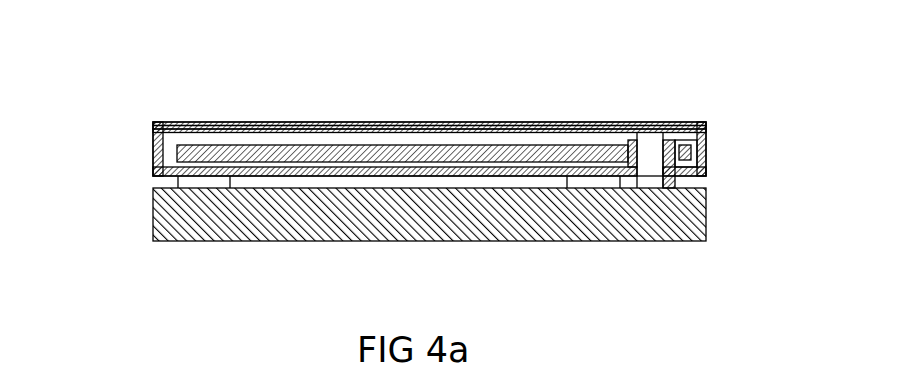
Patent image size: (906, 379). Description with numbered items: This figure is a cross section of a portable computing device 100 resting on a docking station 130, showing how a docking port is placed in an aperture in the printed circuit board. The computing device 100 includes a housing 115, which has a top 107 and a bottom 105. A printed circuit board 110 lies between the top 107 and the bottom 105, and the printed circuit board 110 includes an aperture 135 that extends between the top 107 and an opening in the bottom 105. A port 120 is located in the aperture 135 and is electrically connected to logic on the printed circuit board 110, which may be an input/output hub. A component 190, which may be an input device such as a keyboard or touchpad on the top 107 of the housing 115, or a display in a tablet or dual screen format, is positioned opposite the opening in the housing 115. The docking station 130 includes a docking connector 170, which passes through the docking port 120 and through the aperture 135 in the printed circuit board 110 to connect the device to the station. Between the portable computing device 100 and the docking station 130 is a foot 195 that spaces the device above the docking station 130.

The portable computing device 100 is at (243, 120).
The bottom 105 is at (525, 177).
The top 107 is at (475, 122).
The printed circuit board 110 is at (193, 145).
The housing 115 is at (422, 122).
The port 120 is at (682, 143).
The docking station 130 is at (154, 226).
The aperture 135 is at (621, 154).
The docking connector 170 is at (647, 146).
The component 190 is at (335, 122).
The foot 195 is at (190, 183).